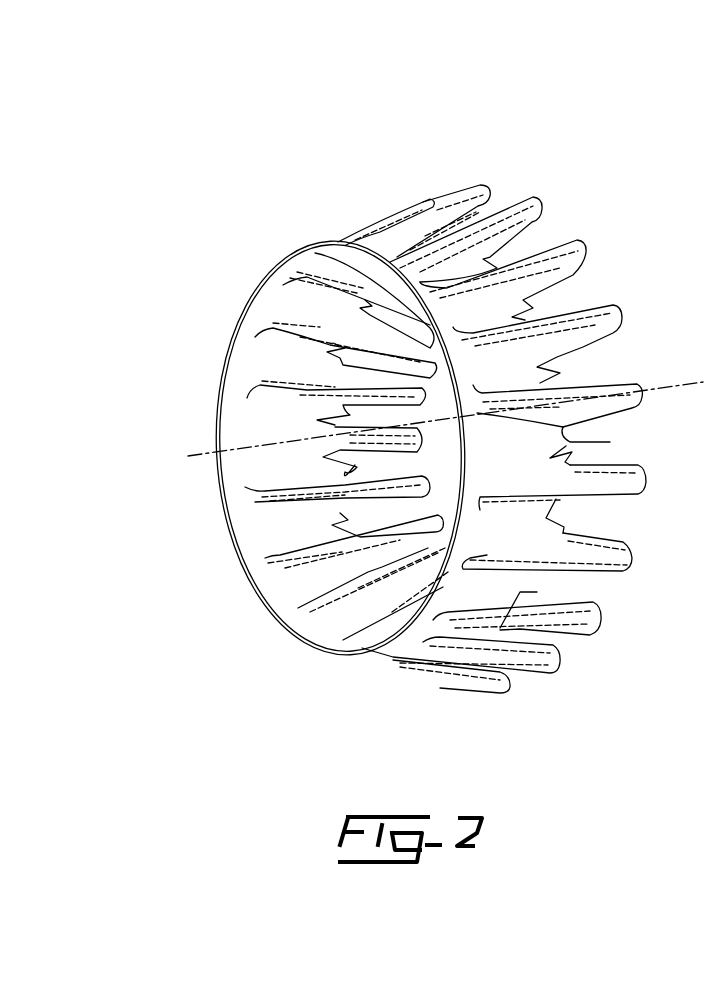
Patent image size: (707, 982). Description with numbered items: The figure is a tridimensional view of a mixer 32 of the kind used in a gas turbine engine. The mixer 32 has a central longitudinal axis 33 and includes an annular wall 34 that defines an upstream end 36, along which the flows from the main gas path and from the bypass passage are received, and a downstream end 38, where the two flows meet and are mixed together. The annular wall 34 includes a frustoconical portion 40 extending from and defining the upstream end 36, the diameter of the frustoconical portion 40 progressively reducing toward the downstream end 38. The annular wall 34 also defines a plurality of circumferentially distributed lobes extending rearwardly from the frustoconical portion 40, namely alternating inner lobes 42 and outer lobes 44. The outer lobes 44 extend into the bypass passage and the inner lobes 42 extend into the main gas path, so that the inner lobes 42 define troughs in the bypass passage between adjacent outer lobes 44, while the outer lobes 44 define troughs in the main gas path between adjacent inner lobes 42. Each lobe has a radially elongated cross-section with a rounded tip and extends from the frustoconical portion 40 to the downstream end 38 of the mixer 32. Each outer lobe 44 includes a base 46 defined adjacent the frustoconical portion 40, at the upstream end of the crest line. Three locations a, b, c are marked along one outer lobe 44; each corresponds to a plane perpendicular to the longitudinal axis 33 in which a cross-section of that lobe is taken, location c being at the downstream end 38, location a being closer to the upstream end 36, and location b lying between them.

The mixer 32 is at (211, 251).
The central longitudinal axis 33 is at (198, 452).
The annular wall 34 is at (413, 192).
The upstream end 36 is at (235, 551).
The downstream end 38 is at (588, 247).
The frustoconical portion 40 is at (262, 508).
The inner lobes 42 is at (480, 437).
The outer lobes 44 is at (615, 306).
The base 46 is at (585, 443).
The location a is at (487, 556).
The location b is at (551, 558).
The location c is at (618, 570).